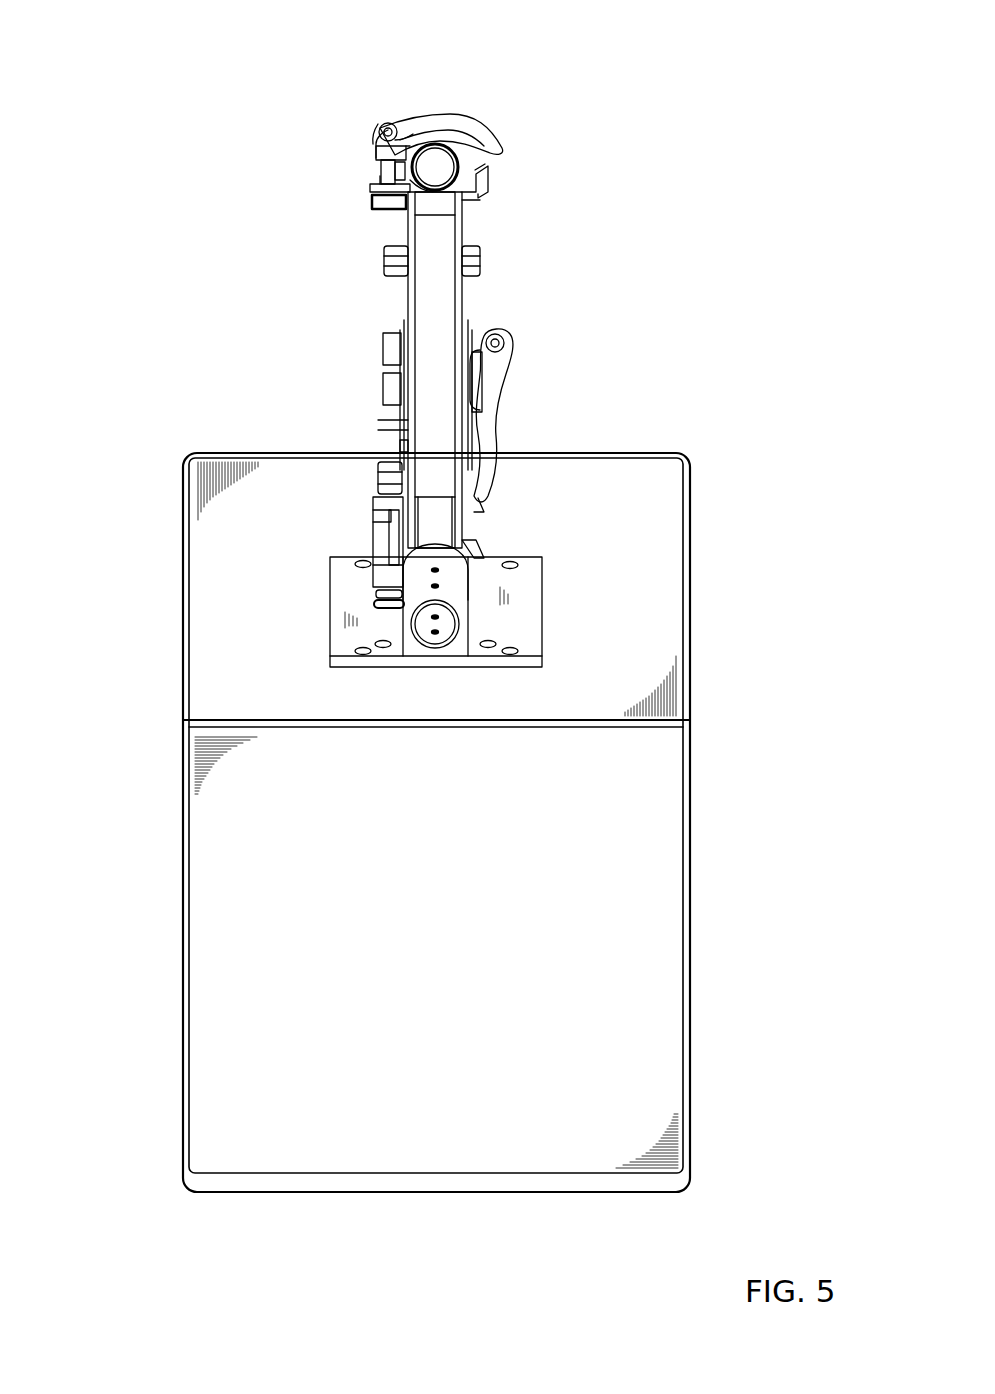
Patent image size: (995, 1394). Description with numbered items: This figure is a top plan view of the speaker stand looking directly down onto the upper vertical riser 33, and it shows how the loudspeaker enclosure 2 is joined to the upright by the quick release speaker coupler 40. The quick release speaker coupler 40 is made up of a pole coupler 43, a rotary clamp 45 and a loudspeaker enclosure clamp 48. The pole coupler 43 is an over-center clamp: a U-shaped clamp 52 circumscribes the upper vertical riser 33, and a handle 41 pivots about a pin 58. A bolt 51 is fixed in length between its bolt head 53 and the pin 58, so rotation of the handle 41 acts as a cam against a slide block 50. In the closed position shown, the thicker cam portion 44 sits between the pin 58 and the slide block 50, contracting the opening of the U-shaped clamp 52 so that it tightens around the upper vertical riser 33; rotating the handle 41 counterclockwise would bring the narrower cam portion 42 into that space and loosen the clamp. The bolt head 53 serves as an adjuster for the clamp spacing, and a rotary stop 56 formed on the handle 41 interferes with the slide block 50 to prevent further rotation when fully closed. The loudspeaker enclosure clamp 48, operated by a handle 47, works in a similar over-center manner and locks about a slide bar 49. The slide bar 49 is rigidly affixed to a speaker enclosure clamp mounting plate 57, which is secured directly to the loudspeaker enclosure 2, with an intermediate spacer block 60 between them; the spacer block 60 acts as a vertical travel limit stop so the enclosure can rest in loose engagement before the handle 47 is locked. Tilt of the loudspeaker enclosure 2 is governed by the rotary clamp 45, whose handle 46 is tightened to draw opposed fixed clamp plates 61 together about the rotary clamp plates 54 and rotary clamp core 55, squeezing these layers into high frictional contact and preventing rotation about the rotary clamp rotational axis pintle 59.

The loudspeaker enclosure 2 is at (668, 1054).
The upper vertical riser 33 is at (455, 166).
The quick release speaker coupler 40 is at (291, 276).
The handle 41 is at (466, 129).
The narrower cam portion 42 is at (380, 130).
The pole coupler 43 is at (459, 103).
The thicker cam portion 44 is at (400, 136).
The rotary clamp 45 is at (380, 397).
The handle 46 is at (505, 356).
The handle 47 is at (391, 520).
The loudspeaker enclosure clamp 48 is at (283, 613).
The slide bar 49 is at (411, 619).
The slide block 50 is at (376, 150).
The bolt 51 is at (380, 176).
The U-shaped clamp 52 is at (380, 166).
The bolt head 53 is at (374, 207).
The rotary clamp plates 54 is at (408, 448).
The rotary clamp core 55 is at (452, 302).
The rotary stop 56 is at (441, 102).
The speaker enclosure clamp mounting plate 57 is at (233, 622).
The pin 58 is at (384, 126).
The rotary clamp rotational axis pintle 59 is at (391, 477).
The spacer block 60 is at (419, 660).
The fixed clamp plates 61 is at (401, 420).